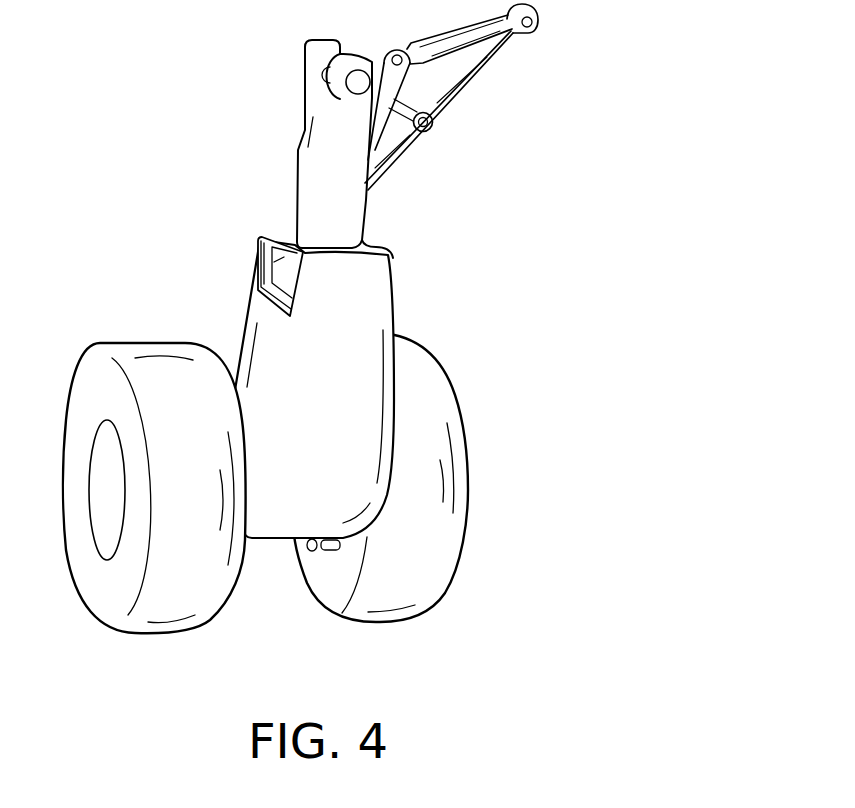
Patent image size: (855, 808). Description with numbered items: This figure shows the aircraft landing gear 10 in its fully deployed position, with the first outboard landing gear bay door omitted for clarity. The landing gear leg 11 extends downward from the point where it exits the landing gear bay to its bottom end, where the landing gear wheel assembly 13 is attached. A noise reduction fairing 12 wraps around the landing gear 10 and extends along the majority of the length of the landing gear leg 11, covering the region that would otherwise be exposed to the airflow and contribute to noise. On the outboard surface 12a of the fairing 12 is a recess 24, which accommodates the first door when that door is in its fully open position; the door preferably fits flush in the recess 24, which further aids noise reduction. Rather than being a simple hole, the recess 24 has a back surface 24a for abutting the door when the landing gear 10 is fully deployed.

The landing gear 10 is at (428, 211).
The landing gear leg 11 is at (297, 193).
The noise reduction fairing 12 is at (360, 380).
The outboard surface 12a is at (243, 345).
The landing gear wheel assembly 13 is at (453, 568).
The recess 24 is at (282, 260).
The back surface 24a is at (288, 278).